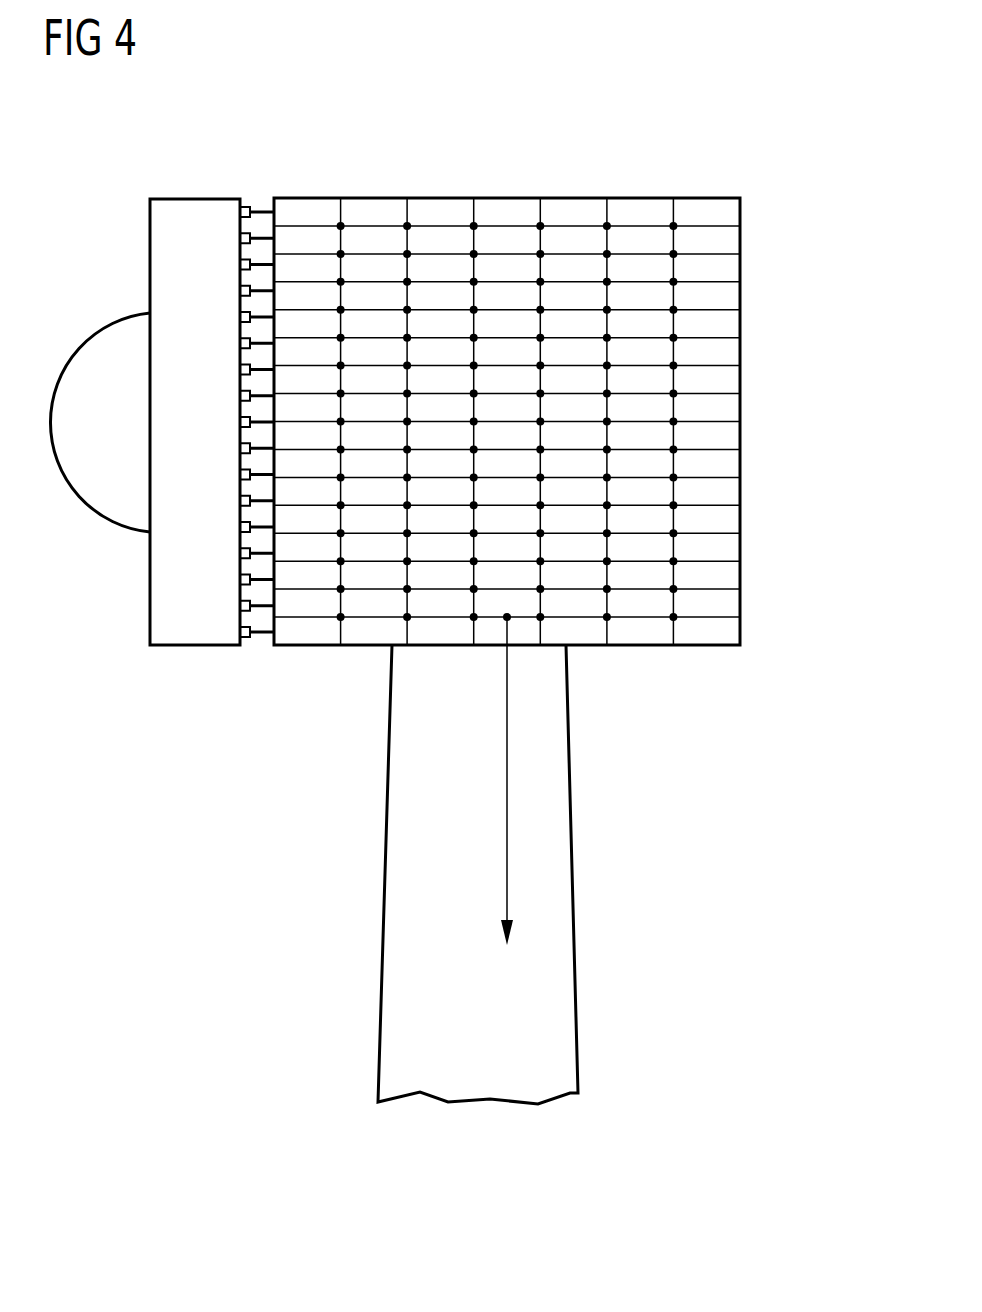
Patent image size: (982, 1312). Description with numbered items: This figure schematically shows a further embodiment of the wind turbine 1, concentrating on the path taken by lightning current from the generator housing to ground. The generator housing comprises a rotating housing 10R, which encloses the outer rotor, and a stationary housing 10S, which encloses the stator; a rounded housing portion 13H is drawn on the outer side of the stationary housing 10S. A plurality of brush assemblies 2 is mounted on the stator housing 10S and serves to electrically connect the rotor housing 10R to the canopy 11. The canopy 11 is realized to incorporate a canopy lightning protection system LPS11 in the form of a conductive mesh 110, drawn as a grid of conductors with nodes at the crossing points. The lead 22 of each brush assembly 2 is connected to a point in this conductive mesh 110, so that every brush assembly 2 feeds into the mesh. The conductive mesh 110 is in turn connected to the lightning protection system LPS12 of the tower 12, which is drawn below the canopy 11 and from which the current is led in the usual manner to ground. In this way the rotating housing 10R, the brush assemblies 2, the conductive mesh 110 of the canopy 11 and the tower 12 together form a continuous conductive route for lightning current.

The wind turbine 1 is at (674, 140).
The stationary housing 10S is at (176, 390).
The rotating housing 10R is at (186, 208).
The hemispherical housing portion 13H is at (100, 502).
The brush assembly 2 is at (240, 213).
The lead 22 is at (270, 236).
The canopy 11 is at (448, 198).
The conductive mesh 110 is at (705, 365).
The canopy lightning protection system LPS11 is at (692, 487).
The tower 12 is at (568, 992).
The tower lightning protection system LPS12 is at (507, 820).